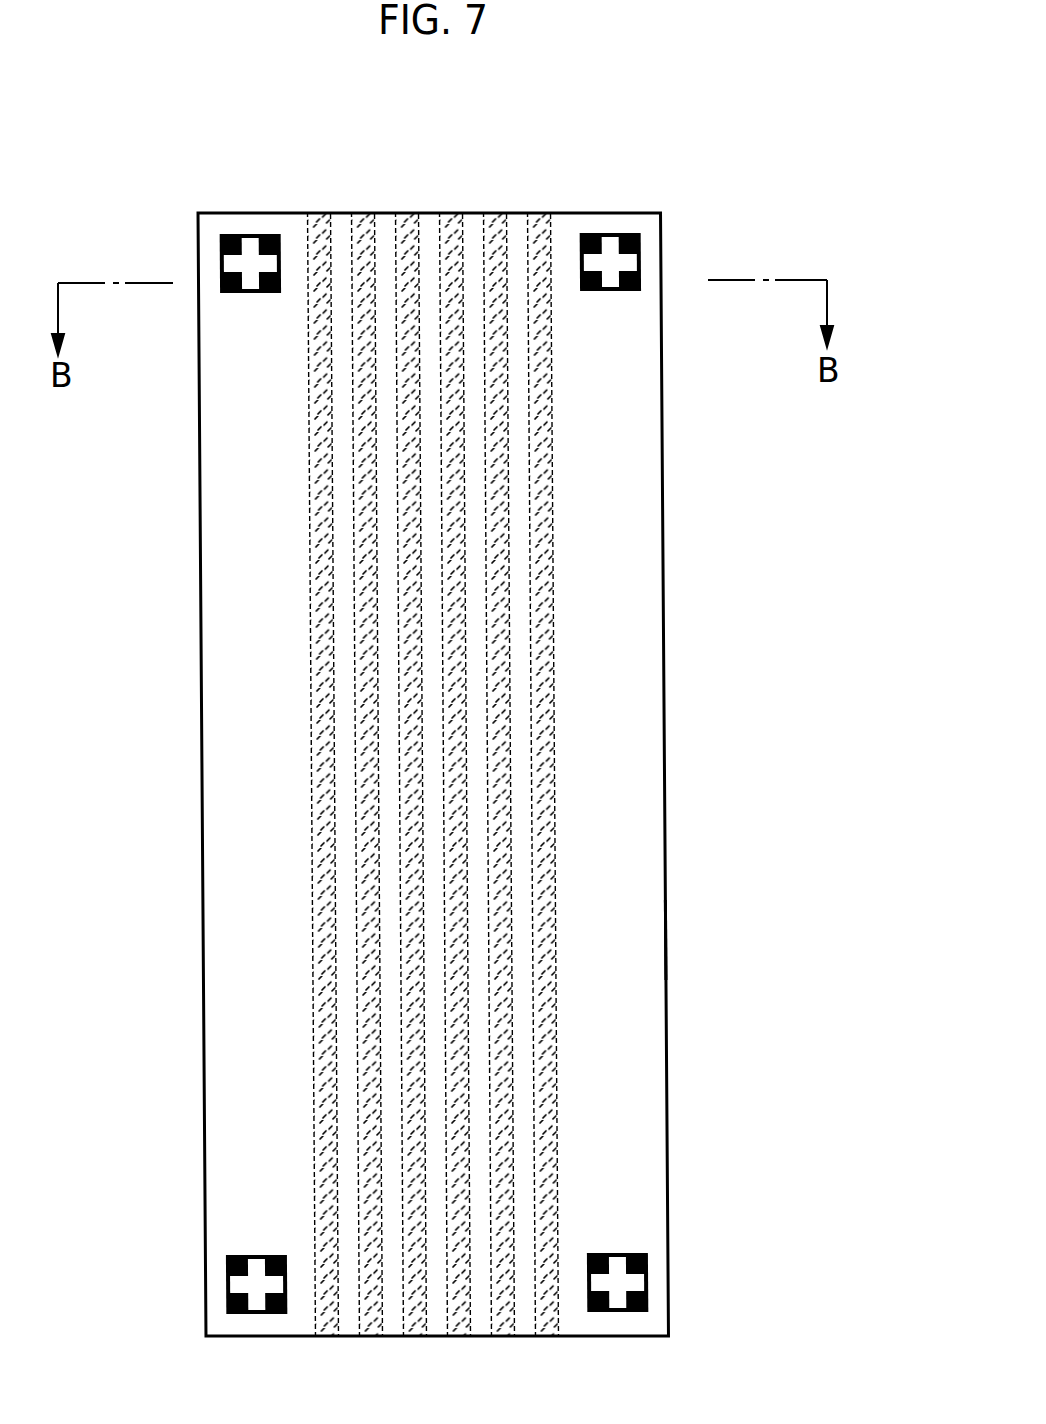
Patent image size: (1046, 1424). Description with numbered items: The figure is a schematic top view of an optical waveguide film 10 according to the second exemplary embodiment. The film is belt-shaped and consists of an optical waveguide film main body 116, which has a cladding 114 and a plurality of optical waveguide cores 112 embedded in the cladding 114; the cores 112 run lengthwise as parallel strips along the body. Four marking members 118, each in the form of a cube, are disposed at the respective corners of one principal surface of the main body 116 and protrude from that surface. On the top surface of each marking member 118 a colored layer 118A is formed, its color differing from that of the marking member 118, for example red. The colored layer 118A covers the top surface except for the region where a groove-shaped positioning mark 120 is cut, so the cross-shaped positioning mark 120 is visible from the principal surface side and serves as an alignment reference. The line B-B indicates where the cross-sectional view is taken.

The optical waveguide film 10 is at (777, 170).
The optical waveguide cores 112 is at (410, 217).
The cladding 114 is at (643, 738).
The optical waveguide film main body 116 is at (668, 940).
The marking member 118 is at (625, 292).
The colored layer 118A is at (640, 237).
The positioning mark 120 is at (610, 262).